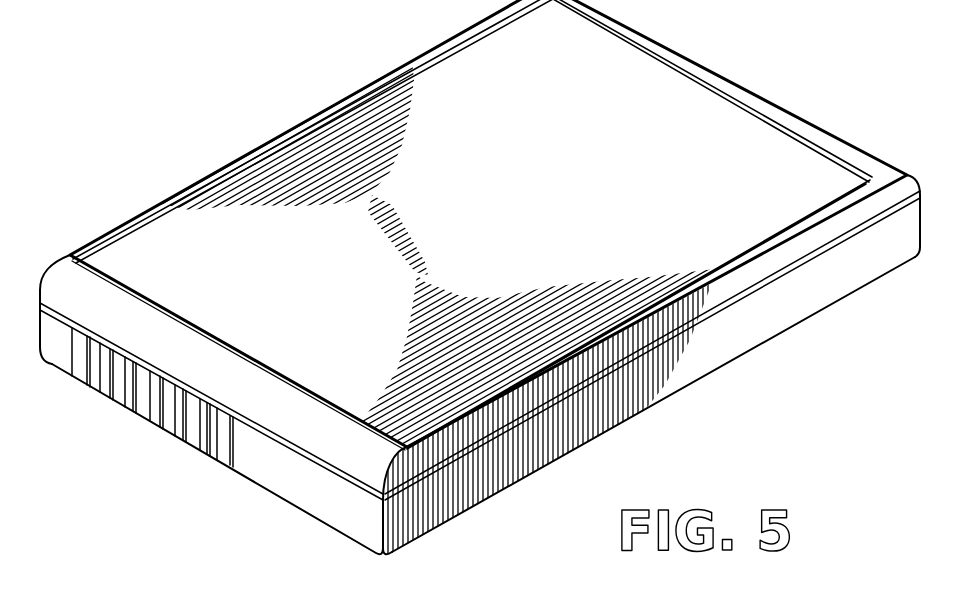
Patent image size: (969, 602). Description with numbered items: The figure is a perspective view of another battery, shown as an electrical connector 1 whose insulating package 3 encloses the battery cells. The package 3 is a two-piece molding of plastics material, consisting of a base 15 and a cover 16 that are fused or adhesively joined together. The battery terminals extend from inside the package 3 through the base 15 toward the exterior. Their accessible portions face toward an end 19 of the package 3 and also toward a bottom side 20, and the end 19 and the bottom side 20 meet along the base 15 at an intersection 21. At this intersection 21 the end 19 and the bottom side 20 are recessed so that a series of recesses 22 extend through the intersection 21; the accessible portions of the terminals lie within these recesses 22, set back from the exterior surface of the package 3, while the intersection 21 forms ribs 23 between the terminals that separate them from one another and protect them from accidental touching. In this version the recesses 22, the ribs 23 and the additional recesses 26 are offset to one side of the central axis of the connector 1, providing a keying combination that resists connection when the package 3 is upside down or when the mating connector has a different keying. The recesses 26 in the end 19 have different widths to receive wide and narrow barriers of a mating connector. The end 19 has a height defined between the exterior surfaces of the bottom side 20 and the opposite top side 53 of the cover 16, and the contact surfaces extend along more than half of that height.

The electrical connector 1 is at (262, 146).
The insulating package 3 is at (163, 201).
The base 15 is at (805, 293).
The cover 16 is at (884, 204).
The end 19 is at (57, 337).
The bottom side 20 is at (697, 390).
The intersection 21 is at (285, 500).
The recesses 22 is at (190, 448).
The ribs 23 is at (183, 380).
The recesses 26 is at (85, 353).
The top side 53 is at (72, 272).